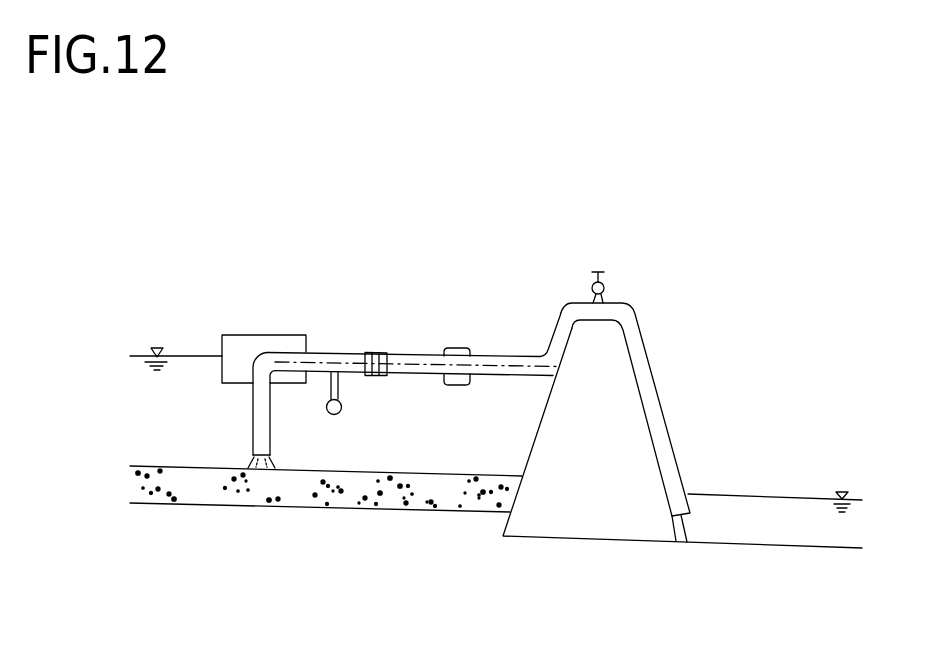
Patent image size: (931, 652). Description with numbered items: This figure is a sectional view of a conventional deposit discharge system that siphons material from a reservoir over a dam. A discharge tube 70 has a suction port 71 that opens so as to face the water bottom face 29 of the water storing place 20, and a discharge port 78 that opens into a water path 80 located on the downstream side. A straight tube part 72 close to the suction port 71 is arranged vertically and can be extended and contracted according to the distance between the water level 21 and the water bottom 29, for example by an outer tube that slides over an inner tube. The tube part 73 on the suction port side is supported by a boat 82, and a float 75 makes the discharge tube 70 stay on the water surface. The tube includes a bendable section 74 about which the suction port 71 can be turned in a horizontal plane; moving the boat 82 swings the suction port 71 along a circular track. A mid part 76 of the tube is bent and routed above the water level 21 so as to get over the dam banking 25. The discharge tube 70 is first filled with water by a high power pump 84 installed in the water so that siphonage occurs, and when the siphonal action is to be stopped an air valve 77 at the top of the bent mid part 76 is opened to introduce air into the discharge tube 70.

The water storing place 20 is at (137, 372).
The water level 21 is at (190, 353).
The boat 82 is at (235, 345).
The tube part 73 is at (320, 357).
The bendable section 74 is at (378, 352).
The float 75 is at (457, 347).
The discharge tube 70 is at (495, 354).
The mid part 76 is at (577, 303).
The air valve 77 is at (605, 283).
The water path 80 is at (780, 510).
The water bottom face 29 is at (188, 468).
The suction port 71 is at (260, 457).
The straight tube part 72 is at (272, 422).
The high power pump 84 is at (337, 417).
The dam banking 25 is at (577, 513).
The discharge port 78 is at (680, 515).